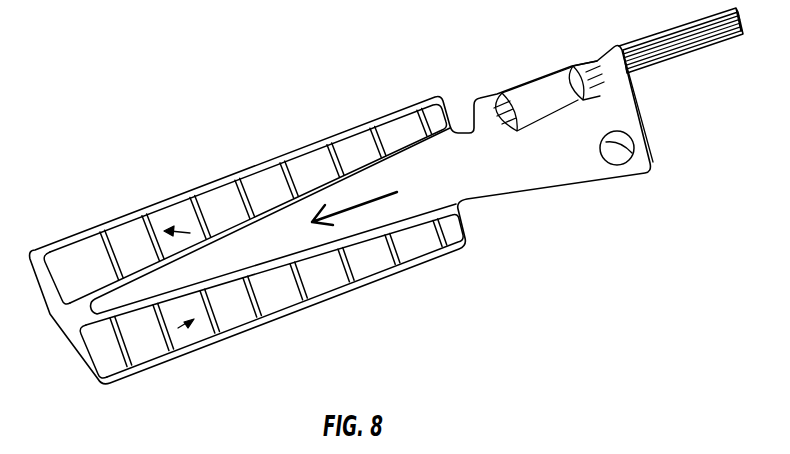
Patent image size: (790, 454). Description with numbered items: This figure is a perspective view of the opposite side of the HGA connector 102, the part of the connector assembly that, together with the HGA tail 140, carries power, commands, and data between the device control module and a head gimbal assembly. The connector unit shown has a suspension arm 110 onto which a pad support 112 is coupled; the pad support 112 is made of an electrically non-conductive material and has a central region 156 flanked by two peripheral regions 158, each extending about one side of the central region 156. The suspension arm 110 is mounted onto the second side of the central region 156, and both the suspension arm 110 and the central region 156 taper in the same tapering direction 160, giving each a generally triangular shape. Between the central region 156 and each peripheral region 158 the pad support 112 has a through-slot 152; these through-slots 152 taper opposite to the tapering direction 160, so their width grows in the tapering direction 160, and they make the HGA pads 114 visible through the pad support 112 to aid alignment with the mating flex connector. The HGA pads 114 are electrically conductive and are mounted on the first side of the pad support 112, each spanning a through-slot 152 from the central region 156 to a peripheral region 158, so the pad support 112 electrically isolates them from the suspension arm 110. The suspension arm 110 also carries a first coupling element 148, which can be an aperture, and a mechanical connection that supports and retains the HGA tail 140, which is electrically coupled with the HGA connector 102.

The HGA connector 102 is at (108, 199).
The suspension arm 110 is at (446, 216).
The pad support 112 is at (343, 136).
The HGA pads 114 is at (245, 206).
The HGA tail 140 is at (692, 43).
The first coupling element 148 is at (632, 153).
The through-slot 152 is at (190, 233).
The central region 156 is at (137, 277).
The peripheral regions 158 is at (216, 188).
The tapering direction 160 is at (424, 190).